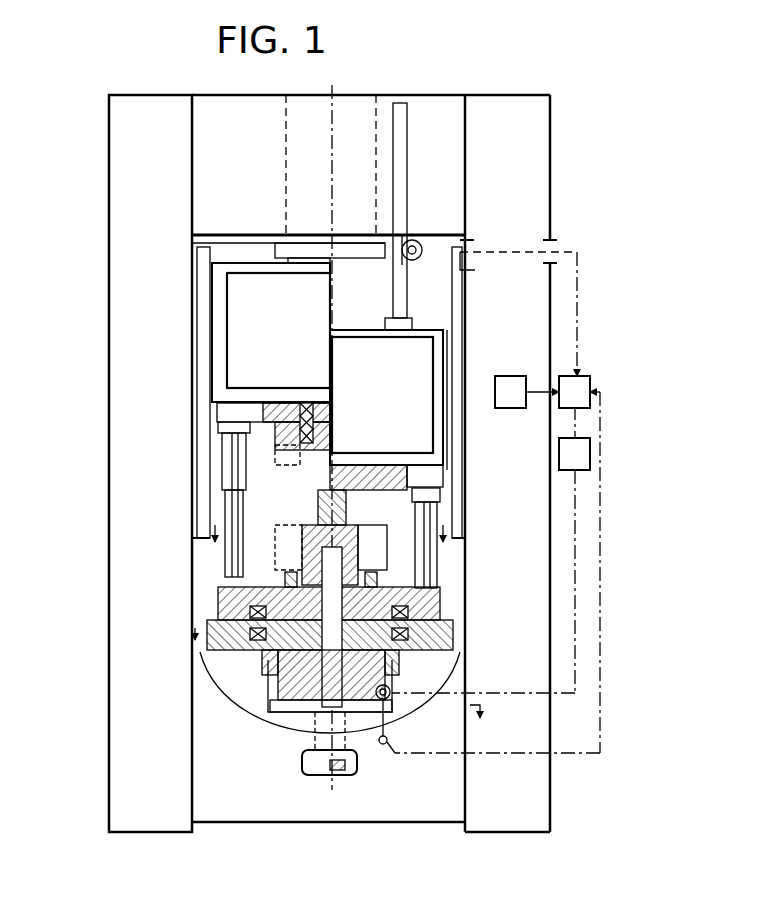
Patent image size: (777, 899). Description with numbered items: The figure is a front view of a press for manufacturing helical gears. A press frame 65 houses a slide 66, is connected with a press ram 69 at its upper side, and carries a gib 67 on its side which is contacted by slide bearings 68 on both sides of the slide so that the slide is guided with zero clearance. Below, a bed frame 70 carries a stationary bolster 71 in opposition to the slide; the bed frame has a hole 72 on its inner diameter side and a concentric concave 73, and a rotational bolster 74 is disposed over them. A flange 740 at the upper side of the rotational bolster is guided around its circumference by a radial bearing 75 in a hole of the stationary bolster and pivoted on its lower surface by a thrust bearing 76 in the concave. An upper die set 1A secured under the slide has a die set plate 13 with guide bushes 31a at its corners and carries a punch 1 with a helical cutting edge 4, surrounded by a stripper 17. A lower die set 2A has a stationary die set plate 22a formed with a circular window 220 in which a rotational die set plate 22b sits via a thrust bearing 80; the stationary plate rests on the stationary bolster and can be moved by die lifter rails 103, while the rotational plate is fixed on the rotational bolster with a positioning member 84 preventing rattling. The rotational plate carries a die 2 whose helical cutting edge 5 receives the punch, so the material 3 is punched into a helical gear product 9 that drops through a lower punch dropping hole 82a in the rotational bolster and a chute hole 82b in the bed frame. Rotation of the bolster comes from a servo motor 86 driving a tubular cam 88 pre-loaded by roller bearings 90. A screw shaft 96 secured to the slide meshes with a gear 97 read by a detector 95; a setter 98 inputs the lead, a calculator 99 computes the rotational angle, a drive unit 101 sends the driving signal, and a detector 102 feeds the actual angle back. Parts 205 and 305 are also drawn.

The punch 1 is at (318, 497).
The upper die set 1A is at (222, 474).
The die 2 is at (222, 600).
The lower die set 2A is at (207, 630).
The material 3 is at (302, 540).
The cutting edge 4 is at (305, 466).
The cutting edge 5 is at (370, 550).
The product 9 is at (437, 555).
The die set plate 13 is at (240, 413).
The stripper 17 is at (235, 486).
The stationary die set plate 22a is at (258, 645).
The rotational die set plate 22b is at (410, 570).
The guide bushes 31a is at (230, 445).
The press frame 65 is at (207, 582).
The slide 66 is at (250, 322).
The gib 67 is at (210, 298).
The slide bearings 68 is at (212, 378).
The press ram 69 is at (350, 258).
The bed frame 70 is at (290, 715).
The stationary bolster 71 is at (268, 690).
The hole 72 is at (300, 702).
The concave 73 is at (270, 720).
The rotational bolster 74 is at (285, 730).
The radial bearing 75 is at (445, 640).
The thrust bearing 76 is at (465, 692).
The thrust bearing 80 is at (440, 620).
The lower punch dropping hole 82a is at (305, 760).
The chute hole 82b is at (325, 778).
The positioning member 84 is at (440, 600).
The servo motor 86 is at (395, 700).
The tubular cam 88 is at (386, 720).
The roller bearings 90 is at (378, 750).
The detector 95 is at (447, 275).
The screw shaft 96 is at (400, 262).
The gear 97 is at (422, 245).
The setter 98 is at (508, 378).
The calculator 99 is at (580, 384).
The drive unit 101 is at (578, 455).
The detector 102 is at (388, 744).
The die lifter rails 103 is at (270, 665).
The nut 205 is at (285, 578).
The window 220 is at (230, 610).
The screw 305 is at (275, 455).
The flange 740 is at (455, 665).